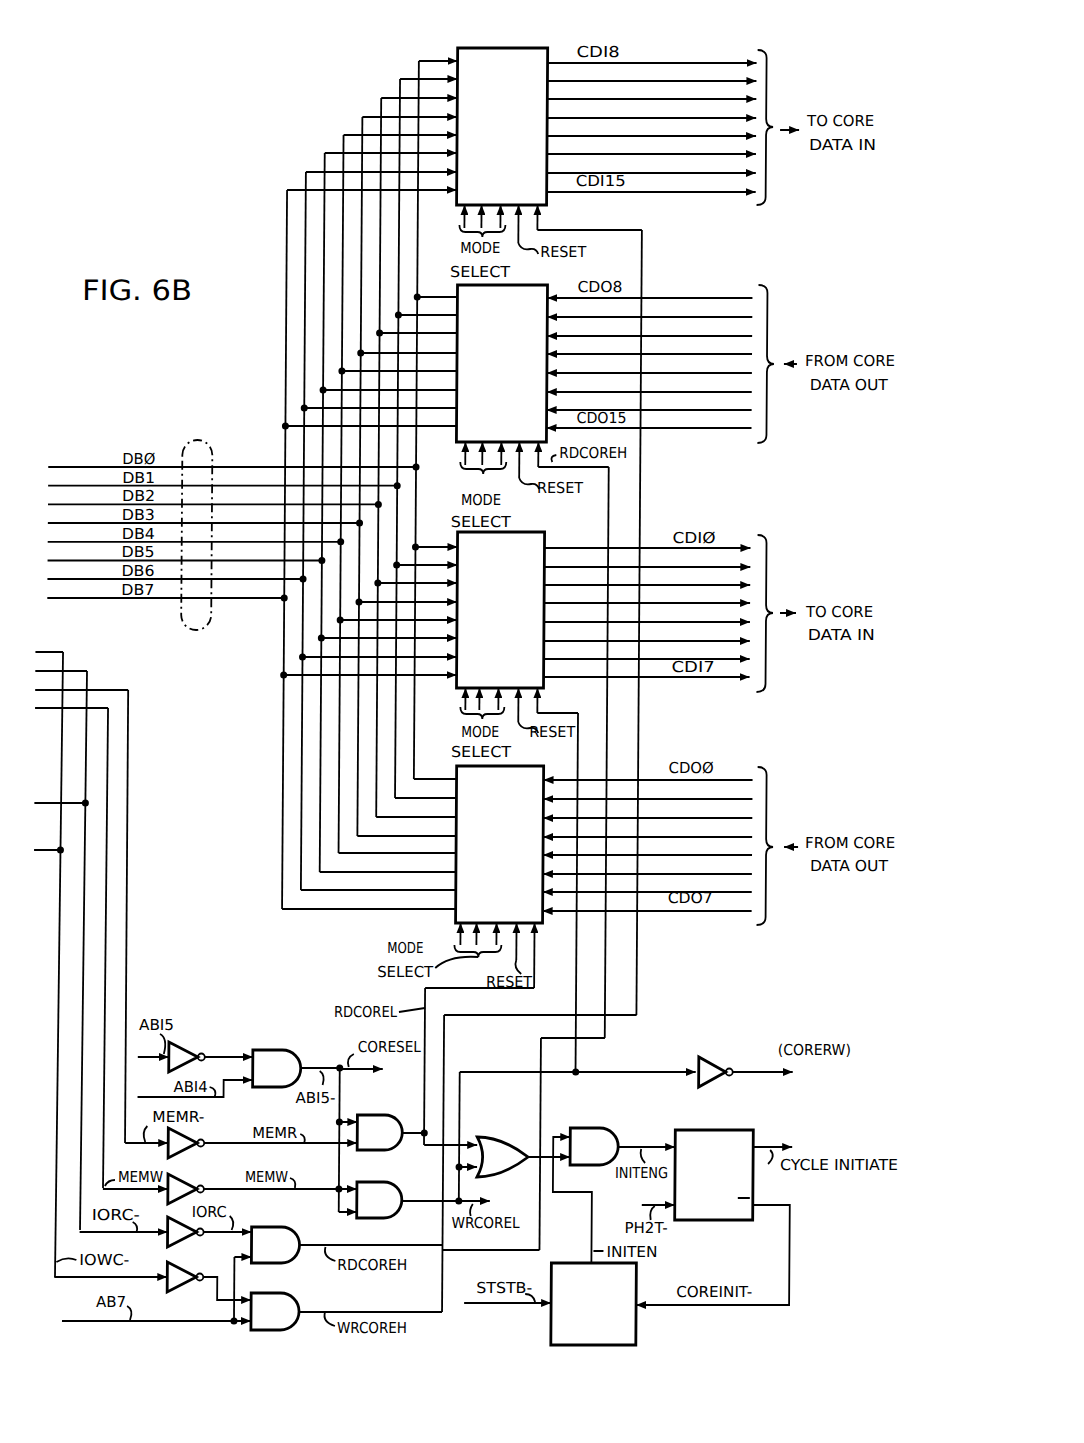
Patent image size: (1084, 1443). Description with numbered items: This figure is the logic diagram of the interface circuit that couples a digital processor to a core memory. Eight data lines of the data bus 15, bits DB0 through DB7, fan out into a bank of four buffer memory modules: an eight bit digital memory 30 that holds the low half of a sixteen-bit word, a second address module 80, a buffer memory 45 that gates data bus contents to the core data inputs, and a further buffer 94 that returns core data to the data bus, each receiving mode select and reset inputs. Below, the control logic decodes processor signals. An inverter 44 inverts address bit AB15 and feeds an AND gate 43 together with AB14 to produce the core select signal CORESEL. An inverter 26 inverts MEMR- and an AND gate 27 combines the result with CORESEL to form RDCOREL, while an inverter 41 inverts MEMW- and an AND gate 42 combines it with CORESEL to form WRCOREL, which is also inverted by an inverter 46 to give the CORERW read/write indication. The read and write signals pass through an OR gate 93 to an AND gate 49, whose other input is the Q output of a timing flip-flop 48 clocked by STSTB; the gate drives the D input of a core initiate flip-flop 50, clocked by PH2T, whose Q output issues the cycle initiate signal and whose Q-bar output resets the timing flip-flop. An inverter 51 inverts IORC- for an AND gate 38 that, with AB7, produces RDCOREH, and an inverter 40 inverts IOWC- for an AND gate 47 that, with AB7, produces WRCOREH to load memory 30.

The eight bit digital memory 30 is at (514, 48).
The address register (128 addresses) 80 is at (529, 285).
The data bus 15 is at (194, 442).
The buffer memory 45 is at (533, 532).
The buffer 94 is at (543, 925).
The inverter 44 is at (187, 1052).
The AND gate 43 is at (285, 1050).
The AND gate 27 is at (376, 1116).
The OR gate 93 is at (498, 1137).
The AND gate 49 is at (593, 1128).
The core initiate flip-flop 50 is at (688, 1130).
The inverter 46 is at (716, 1064).
The inverter 26 is at (202, 1140).
The inverter 41 is at (189, 1176).
The AND gate 42 is at (383, 1181).
The AND gate 38 is at (284, 1227).
The inverter 51 is at (186, 1240).
The AND gate 47 is at (284, 1293).
The inverter 40 is at (173, 1290).
The timing flip-flop 48 is at (637, 1322).